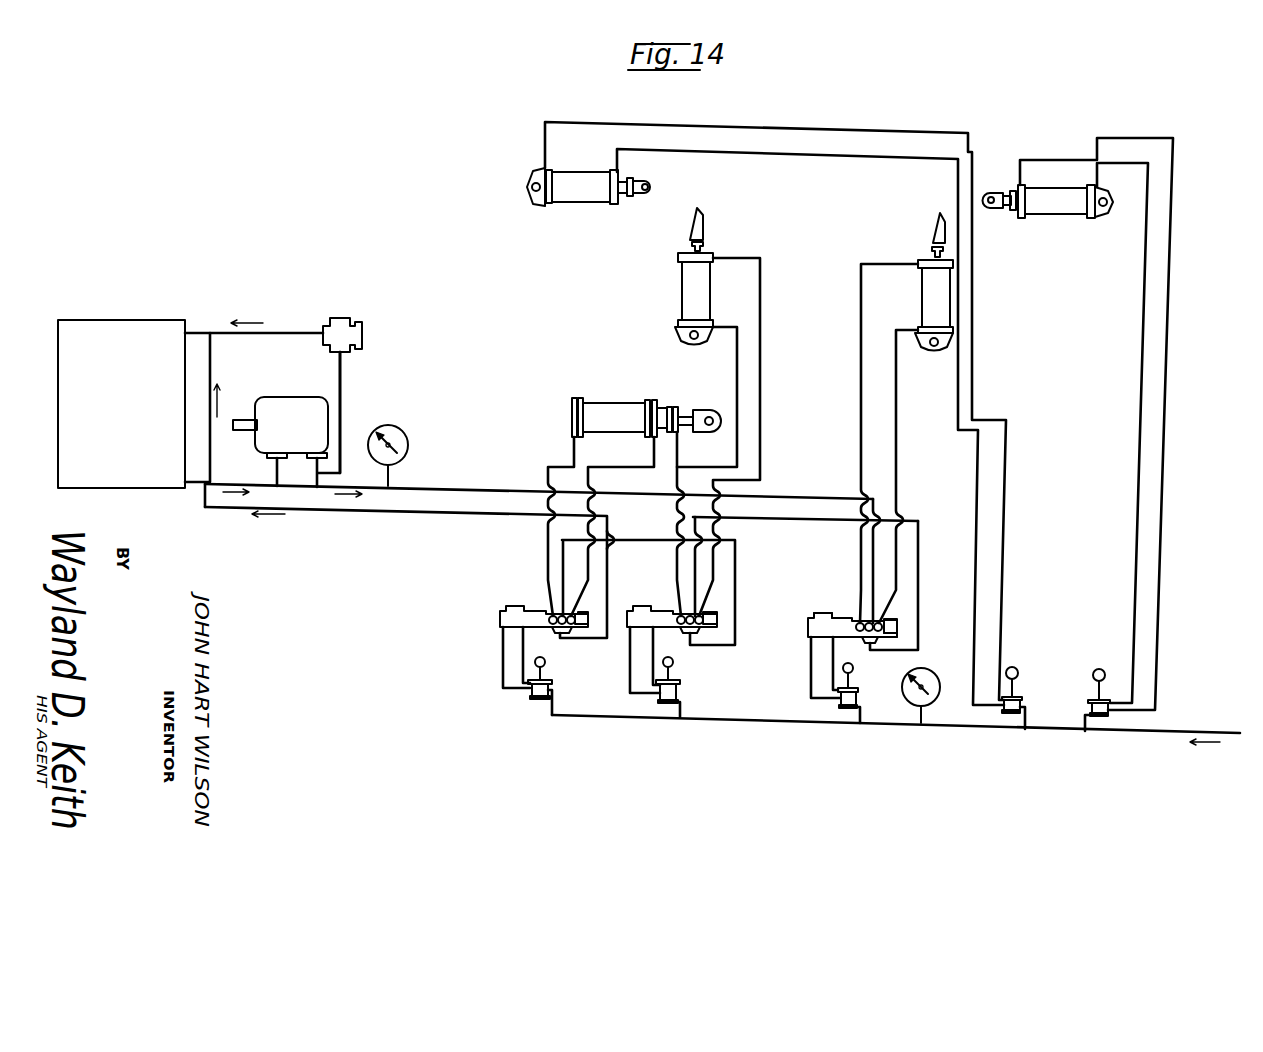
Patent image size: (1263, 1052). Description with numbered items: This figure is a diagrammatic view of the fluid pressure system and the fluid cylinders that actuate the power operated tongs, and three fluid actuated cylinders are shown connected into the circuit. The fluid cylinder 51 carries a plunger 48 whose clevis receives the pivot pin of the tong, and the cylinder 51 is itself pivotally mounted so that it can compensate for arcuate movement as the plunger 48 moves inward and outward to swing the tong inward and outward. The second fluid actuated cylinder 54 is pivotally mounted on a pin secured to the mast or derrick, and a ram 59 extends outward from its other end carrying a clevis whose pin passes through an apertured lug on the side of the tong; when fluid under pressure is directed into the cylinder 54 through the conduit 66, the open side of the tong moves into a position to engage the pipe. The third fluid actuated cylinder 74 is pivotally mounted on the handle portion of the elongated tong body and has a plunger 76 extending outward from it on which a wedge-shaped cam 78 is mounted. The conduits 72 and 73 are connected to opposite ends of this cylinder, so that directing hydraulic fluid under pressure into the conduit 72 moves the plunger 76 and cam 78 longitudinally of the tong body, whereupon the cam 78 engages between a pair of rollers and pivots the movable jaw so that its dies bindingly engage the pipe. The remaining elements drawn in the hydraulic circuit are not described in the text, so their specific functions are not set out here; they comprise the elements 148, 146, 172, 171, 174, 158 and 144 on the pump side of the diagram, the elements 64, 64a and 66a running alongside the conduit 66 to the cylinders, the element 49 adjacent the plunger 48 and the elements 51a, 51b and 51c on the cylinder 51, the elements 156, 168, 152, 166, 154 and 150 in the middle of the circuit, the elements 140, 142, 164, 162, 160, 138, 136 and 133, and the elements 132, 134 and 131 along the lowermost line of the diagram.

The fluid reservoir 148 is at (130, 322).
The pump 146 is at (287, 400).
The relief valve 172 is at (356, 322).
The relief line 171 is at (341, 381).
The pressure gauge 174 is at (398, 428).
The pressure supply line 158 is at (423, 509).
The return line 144 is at (807, 492).
The second fluid actuated cylinder 54 is at (572, 200).
The ram 59 is at (638, 179).
The conduit 64 is at (1003, 604).
The conduit 66 is at (977, 467).
The conduit 64a is at (1136, 473).
The conduit 66a is at (1165, 478).
The third fluid actuated cylinder 74 is at (682, 275).
The plunger 76 is at (704, 247).
The wedge-shaped cam 78 is at (700, 226).
The conduit 73 is at (762, 300).
The conduit 72 is at (737, 357).
The fluid cylinder 51 is at (617, 410).
The piston rod 49 is at (657, 410).
The plunger 48 is at (686, 412).
The cylinder port 51a is at (572, 443).
The cylinder port 51b is at (653, 453).
The cylinder port 51c is at (675, 446).
The control valve 156 is at (523, 607).
The pilot valve 168 is at (545, 677).
The control valve 152 is at (660, 598).
The pilot valve 166 is at (673, 677).
The conduit 154 is at (736, 592).
The conduit 150 is at (917, 570).
The control valve 140 is at (810, 642).
The valve body 142 is at (813, 614).
The valve ball 164 is at (860, 623).
The valve spool 162 is at (884, 614).
The valve port 160 is at (884, 637).
The conduit 138 is at (832, 657).
The pilot valve 136 is at (850, 686).
The pressure gauge 133 is at (907, 698).
The valve 132 is at (1013, 693).
The valve 134 is at (1093, 690).
The return conduit 131 is at (1107, 733).